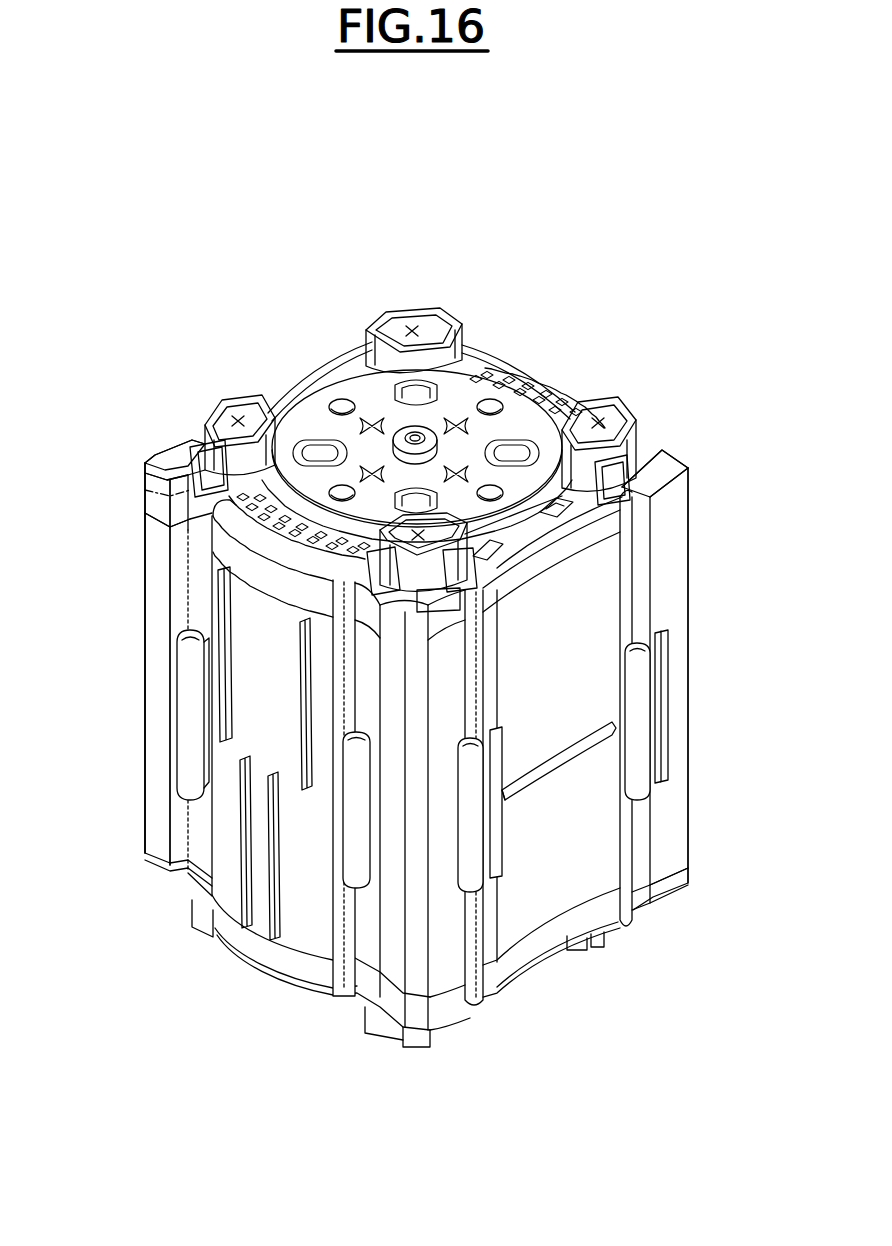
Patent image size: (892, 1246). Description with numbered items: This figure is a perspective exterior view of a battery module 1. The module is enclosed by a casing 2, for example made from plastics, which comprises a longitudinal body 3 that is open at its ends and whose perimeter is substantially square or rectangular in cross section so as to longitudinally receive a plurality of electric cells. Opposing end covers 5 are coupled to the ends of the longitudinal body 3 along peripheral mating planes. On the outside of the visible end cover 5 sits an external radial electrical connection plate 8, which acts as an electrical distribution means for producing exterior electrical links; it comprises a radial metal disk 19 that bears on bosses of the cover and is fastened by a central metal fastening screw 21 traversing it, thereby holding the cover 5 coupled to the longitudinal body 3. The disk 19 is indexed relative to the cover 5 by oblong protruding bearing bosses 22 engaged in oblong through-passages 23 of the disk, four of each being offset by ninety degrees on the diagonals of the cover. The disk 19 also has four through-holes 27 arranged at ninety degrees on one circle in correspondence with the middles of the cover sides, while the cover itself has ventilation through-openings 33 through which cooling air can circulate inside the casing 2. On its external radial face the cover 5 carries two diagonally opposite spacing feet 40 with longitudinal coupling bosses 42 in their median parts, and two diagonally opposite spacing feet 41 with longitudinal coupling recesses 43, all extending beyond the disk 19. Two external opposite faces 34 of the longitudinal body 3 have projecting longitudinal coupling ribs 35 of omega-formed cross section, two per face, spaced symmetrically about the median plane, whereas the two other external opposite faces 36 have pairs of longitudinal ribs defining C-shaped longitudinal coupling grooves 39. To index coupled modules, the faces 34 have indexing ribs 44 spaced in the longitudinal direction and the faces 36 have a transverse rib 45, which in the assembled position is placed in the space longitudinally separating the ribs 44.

The battery module 1 is at (238, 306).
The casing 2 is at (700, 796).
The longitudinal body 3 is at (698, 610).
The end cover 5 is at (690, 470).
The external radial electrical connection plate 8 is at (520, 520).
The radial metal disk 19 is at (522, 412).
The central metal fastening screw 21 is at (408, 432).
The protruding bearing boss 22 is at (156, 464).
The through-passage 23 is at (175, 486).
The through-hole 27 is at (338, 400).
The ventilation through-opening 33 is at (190, 510).
The external opposite face 34 is at (156, 768).
The longitudinal coupling rib 35 is at (190, 712).
The external opposite face 36 is at (680, 700).
The longitudinal coupling groove 39 is at (650, 752).
The spacing foot 40 is at (196, 440).
The spacing foot 41 is at (480, 352).
The longitudinal coupling boss 42 is at (240, 404).
The longitudinal coupling recess 43 is at (468, 318).
The indexing rib 44 is at (220, 625).
The transverse rib 45 is at (578, 744).